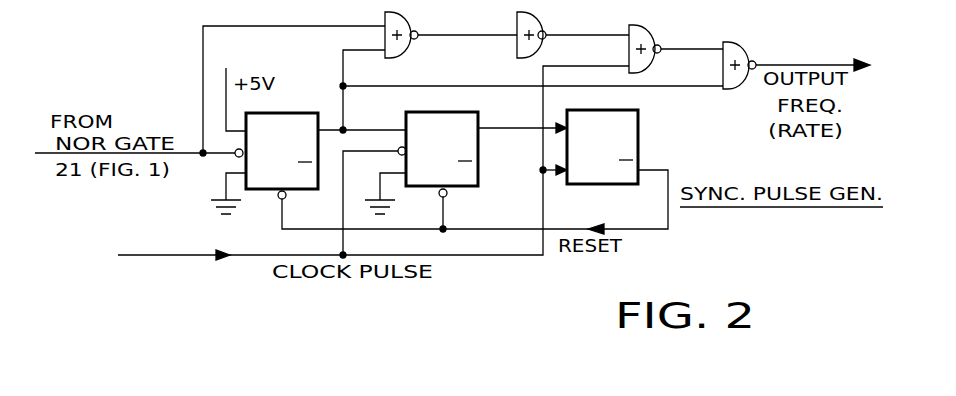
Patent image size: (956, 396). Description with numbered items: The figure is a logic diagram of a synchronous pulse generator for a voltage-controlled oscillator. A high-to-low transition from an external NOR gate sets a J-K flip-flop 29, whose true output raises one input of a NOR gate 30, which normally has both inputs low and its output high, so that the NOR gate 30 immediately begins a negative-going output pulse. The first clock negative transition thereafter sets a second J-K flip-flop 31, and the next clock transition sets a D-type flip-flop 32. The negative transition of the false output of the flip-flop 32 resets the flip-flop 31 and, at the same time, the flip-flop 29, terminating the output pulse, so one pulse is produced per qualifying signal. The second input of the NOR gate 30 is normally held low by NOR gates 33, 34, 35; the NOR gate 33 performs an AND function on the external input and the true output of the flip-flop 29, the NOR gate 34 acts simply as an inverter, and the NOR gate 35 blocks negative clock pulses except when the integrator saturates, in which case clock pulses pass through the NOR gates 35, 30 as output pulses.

The J-K flip-flop 29 is at (293, 113).
The J-K flip-flop 31 is at (478, 140).
The D-type flip-flop 32 is at (640, 128).
The NOR gate 33 is at (406, 54).
The NOR gate 34 is at (536, 50).
The NOR gate 35 is at (657, 22).
The NOR gate 30 is at (740, 45).